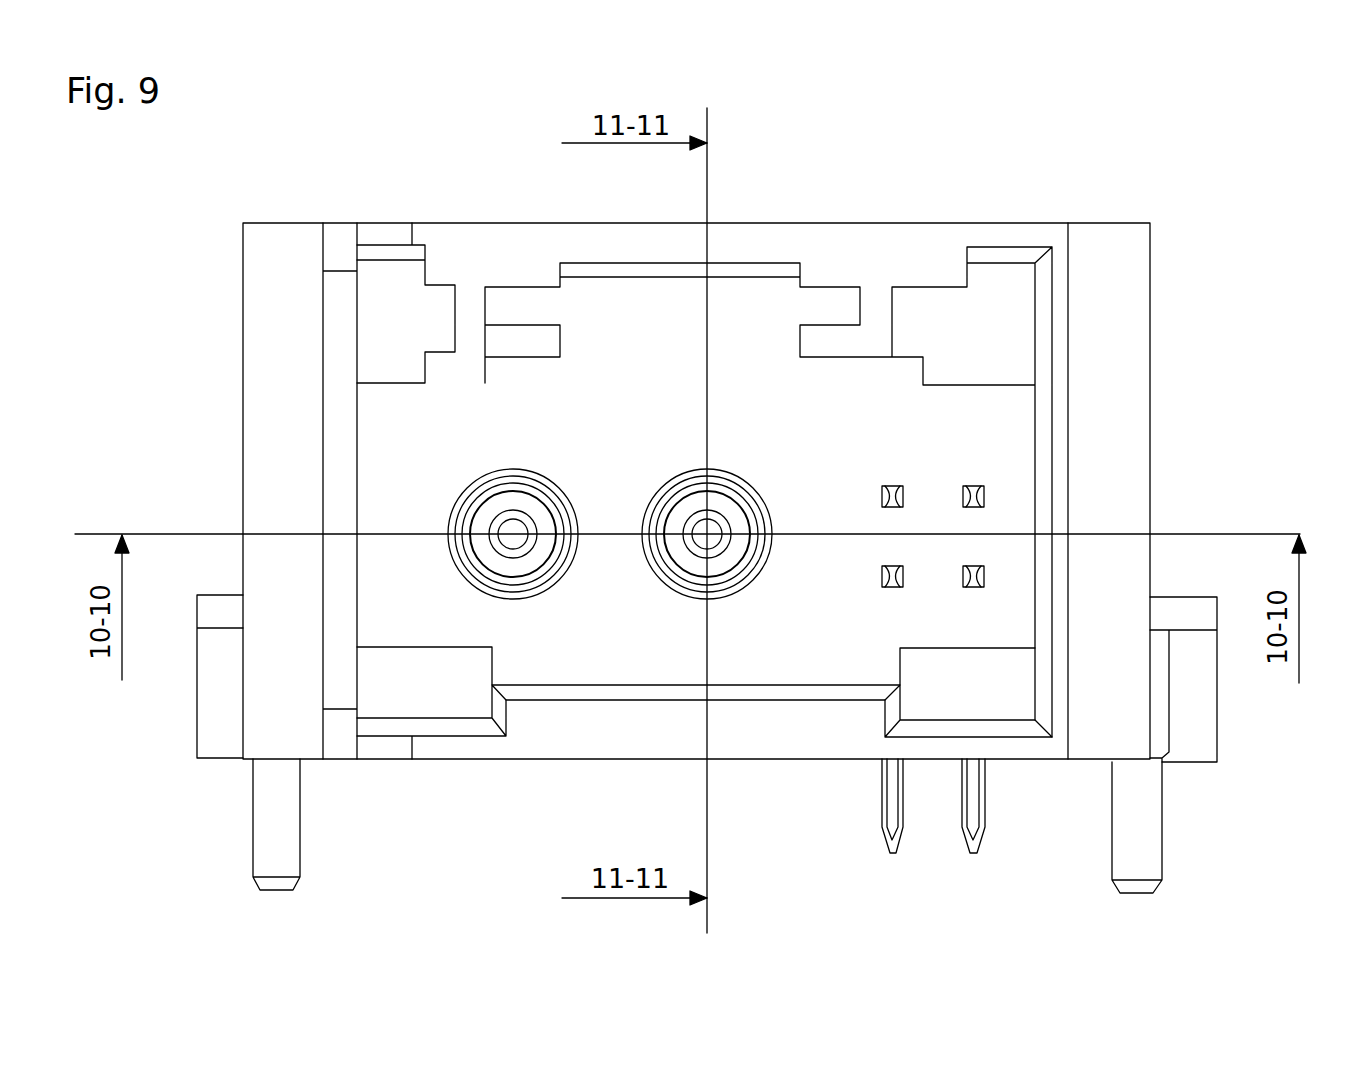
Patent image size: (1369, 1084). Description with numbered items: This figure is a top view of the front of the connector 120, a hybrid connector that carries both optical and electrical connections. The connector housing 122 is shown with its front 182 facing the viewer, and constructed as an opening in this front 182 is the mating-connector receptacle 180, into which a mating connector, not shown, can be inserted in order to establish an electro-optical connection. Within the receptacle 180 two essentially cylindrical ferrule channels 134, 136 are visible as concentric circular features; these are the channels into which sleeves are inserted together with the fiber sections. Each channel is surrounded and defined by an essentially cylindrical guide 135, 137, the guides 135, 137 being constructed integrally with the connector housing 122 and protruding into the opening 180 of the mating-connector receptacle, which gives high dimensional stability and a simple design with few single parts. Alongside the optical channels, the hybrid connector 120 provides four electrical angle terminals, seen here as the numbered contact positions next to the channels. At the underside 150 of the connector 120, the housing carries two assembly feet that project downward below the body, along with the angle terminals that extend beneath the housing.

The connector 120 is at (1150, 367).
The connector housing 122 is at (1133, 452).
The ferrule channel 134 is at (732, 557).
The cylindrical guide 135 is at (740, 487).
The ferrule channel 136 is at (493, 562).
The cylindrical guide 137 is at (480, 487).
The underside 150 is at (813, 760).
The mating-connector receptacle 180 is at (628, 424).
The front 182 is at (532, 733).